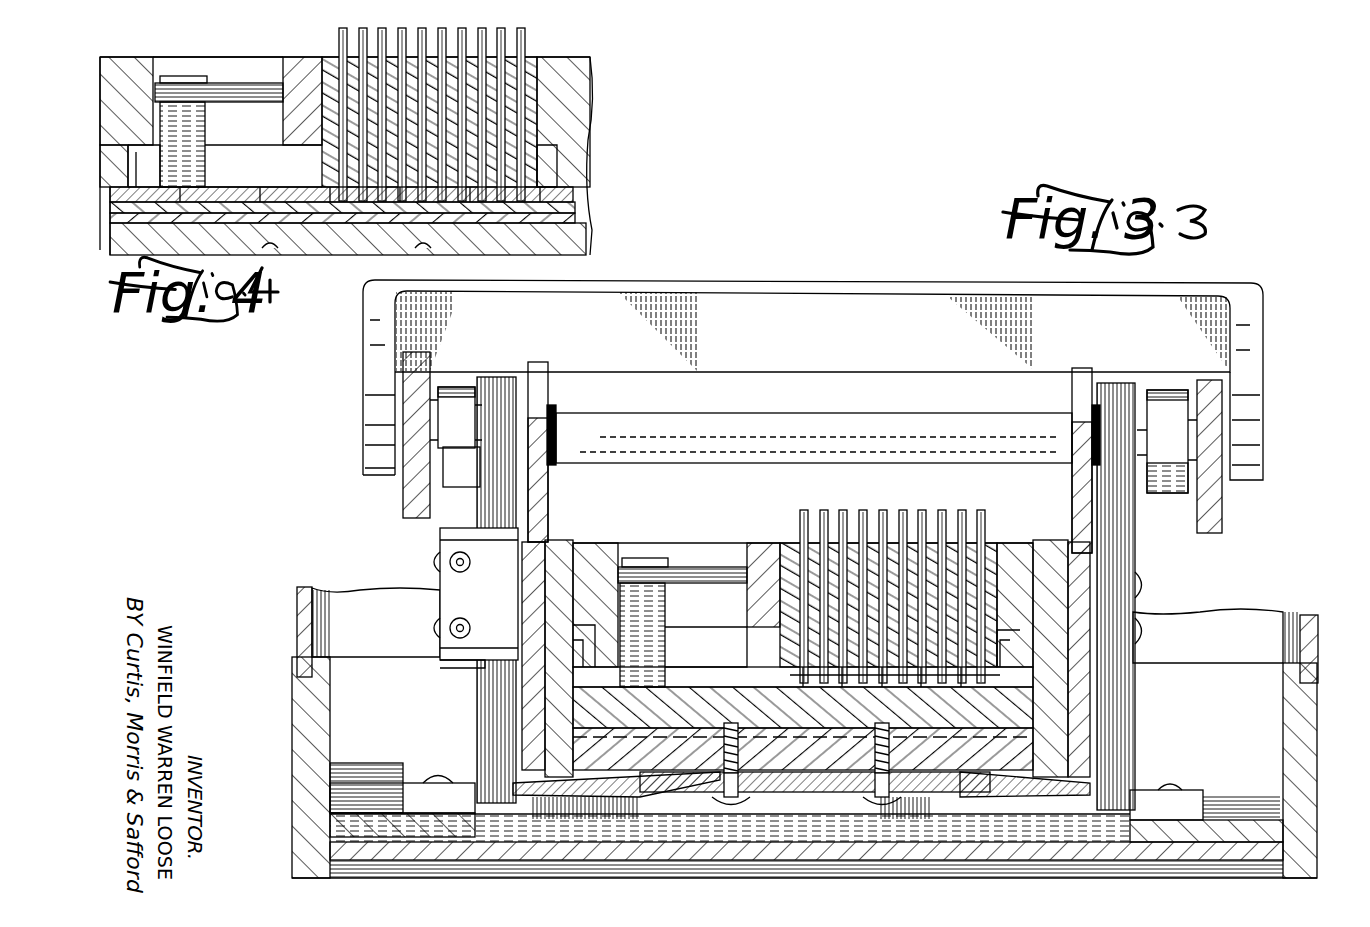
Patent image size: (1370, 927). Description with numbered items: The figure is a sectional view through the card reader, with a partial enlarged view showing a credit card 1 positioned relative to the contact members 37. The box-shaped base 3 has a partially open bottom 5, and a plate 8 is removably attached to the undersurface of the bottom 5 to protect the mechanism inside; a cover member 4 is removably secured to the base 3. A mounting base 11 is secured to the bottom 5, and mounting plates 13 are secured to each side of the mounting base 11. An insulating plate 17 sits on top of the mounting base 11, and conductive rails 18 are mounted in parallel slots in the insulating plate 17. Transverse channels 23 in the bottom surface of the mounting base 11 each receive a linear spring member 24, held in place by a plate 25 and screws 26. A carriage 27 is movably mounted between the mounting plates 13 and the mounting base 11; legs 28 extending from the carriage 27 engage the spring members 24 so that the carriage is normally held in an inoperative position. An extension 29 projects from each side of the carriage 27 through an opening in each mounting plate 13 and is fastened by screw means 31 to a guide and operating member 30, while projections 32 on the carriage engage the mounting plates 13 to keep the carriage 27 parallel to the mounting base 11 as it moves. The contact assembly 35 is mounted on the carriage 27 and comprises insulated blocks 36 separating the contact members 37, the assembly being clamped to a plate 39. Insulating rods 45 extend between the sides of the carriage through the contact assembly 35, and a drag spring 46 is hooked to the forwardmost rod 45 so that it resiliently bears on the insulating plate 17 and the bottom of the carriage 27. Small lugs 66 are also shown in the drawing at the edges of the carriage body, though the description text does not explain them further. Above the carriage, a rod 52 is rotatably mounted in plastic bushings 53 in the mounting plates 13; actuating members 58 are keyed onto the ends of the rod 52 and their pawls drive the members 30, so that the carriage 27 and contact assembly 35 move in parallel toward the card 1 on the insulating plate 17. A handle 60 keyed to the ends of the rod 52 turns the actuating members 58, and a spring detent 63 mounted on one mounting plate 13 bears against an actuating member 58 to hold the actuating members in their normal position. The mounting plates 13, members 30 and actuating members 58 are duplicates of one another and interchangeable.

In FIG. 4, the credit card 1 is at (575, 195).
In FIG. 3, the base 3 is at (1300, 758).
In FIG. 3, the cover member 4 is at (405, 495).
In FIG. 3, the partially open bottom 5 is at (1252, 815).
In FIG. 3, the plate 8 is at (1145, 862).
In FIG. 4, the mounting base 11 is at (565, 239).
In FIG. 3, the mounting base 11 is at (405, 790).
In FIG. 3, the mounting plates 13 is at (540, 388).
In FIG. 4, the insulating plate 17 is at (565, 212).
In FIG. 3, the insulating plate 17 is at (740, 698).
In FIG. 4, the conductive rails 18 is at (340, 196).
In FIG. 3, the conductive rails 18 is at (800, 684).
In FIG. 3, the transverse channels 23 is at (757, 808).
In FIG. 3, the linear spring member 24 is at (1003, 808).
In FIG. 3, the plate 25 is at (845, 808).
In FIG. 3, the screws 26 is at (725, 800).
In FIG. 4, the carriage 27 is at (572, 100).
In FIG. 3, the carriage 27 is at (696, 545).
In FIG. 3, the legs 28 is at (555, 735).
In FIG. 3, the extension 29 is at (520, 606).
In FIG. 3, the guide and operating member 30 is at (490, 693).
In FIG. 3, the screw means 31 is at (435, 562).
In FIG. 3, the projections 32 is at (553, 550).
In FIG. 4, the contact assembly 35 is at (533, 55).
In FIG. 3, the contact assembly 35 is at (992, 540).
In FIG. 4, the insulated blocks 36 is at (320, 63).
In FIG. 3, the insulated blocks 36 is at (790, 545).
In FIG. 4, the contact members 37 is at (372, 28).
In FIG. 3, the contact members 37 is at (950, 508).
In FIG. 4, the plate 39 is at (298, 79).
In FIG. 3, the plate 39 is at (758, 626).
In FIG. 4, the insulating rods 45 is at (222, 93).
In FIG. 3, the insulating rods 45 is at (685, 582).
In FIG. 4, the drag spring 46 is at (185, 169).
In FIG. 3, the drag spring 46 is at (655, 640).
In FIG. 3, the rod 52 is at (810, 430).
In FIG. 3, the plastic bushings 53 is at (552, 465).
In FIG. 3, the actuating members 58 is at (458, 395).
In FIG. 3, the handle 60 is at (1255, 368).
In FIG. 3, the spring detent 63 is at (450, 528).
In FIG. 4, the lug 66 is at (130, 158).
In FIG. 3, the lug 66 is at (796, 659).